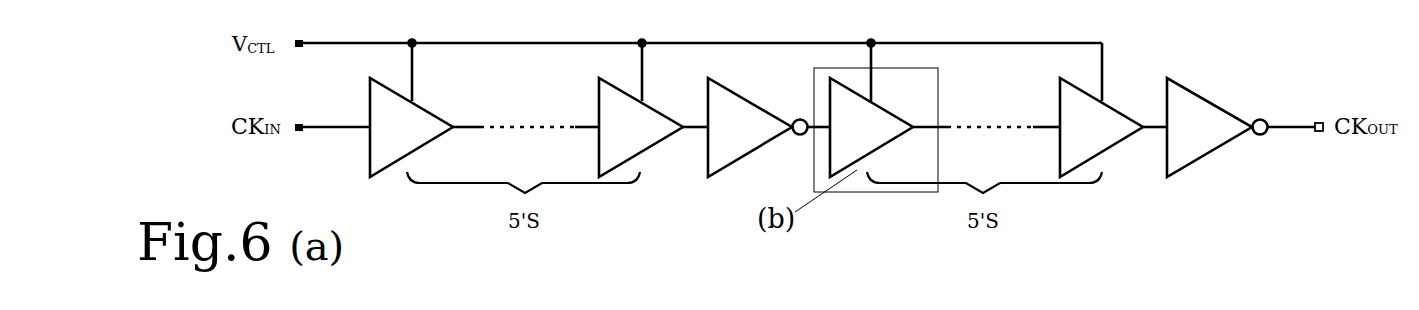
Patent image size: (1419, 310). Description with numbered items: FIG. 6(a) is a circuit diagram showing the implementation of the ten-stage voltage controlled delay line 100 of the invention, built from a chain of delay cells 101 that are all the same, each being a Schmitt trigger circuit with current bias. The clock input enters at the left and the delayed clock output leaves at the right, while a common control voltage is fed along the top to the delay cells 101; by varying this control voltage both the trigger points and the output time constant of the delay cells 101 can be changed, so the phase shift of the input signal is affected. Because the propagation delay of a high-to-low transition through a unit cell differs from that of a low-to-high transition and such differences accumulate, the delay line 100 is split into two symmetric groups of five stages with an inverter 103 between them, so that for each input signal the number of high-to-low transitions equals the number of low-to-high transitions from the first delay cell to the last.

The voltage controlled delay line 100 is at (208, 98).
The delay cell 101 is at (623, 127).
The inverter 103 is at (758, 127).